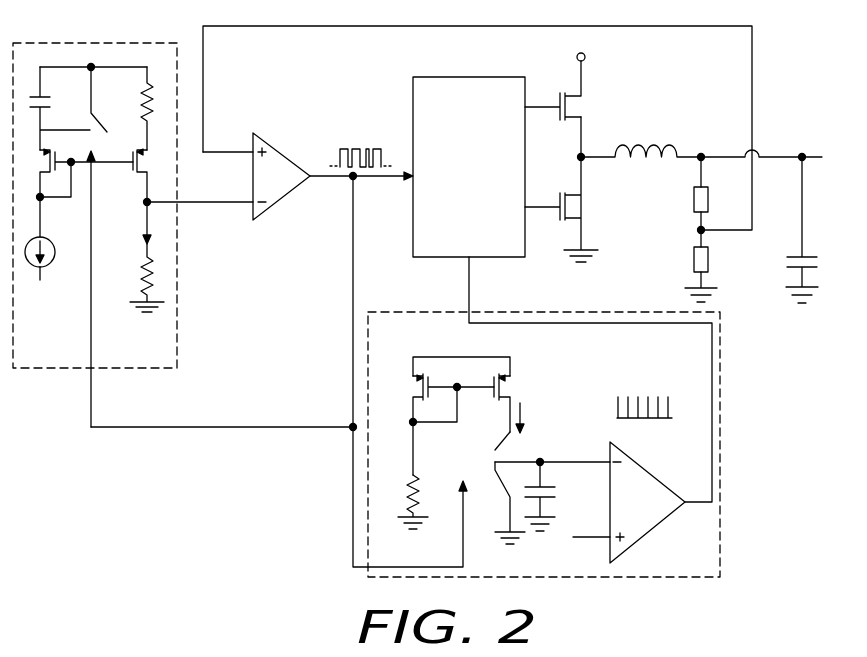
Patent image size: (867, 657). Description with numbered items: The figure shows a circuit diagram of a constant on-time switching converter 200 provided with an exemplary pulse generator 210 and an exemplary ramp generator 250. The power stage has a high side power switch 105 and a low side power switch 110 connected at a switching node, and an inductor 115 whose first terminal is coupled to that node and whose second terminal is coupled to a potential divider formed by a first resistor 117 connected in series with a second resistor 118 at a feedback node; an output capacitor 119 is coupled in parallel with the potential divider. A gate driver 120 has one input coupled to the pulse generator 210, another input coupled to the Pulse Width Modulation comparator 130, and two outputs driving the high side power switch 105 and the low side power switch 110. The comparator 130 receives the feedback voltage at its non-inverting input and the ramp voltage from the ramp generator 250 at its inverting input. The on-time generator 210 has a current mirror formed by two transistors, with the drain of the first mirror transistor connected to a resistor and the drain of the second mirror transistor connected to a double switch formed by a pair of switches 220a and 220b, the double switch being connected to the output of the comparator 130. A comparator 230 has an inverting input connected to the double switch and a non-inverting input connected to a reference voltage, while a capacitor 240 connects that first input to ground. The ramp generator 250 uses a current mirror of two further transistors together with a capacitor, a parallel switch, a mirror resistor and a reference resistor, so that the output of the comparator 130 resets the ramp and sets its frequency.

The buck converter / DC-DC converter 200 is at (168, 444).
The ramp generator 250 is at (97, 44).
The Pulse Width Modulation PWM comparator 130 is at (283, 147).
The gate driver 120 is at (480, 181).
The high side power switch 105 is at (582, 110).
The low side power switch 110 is at (582, 210).
The inductor 115 is at (640, 145).
The first resistor 117 is at (690, 205).
The second resistor 118 is at (687, 258).
The output capacitor 119 is at (782, 262).
The pulse generator 210 is at (576, 417).
The switch 220a is at (496, 444).
The switch 220b is at (498, 492).
The comparator 230 is at (657, 473).
The capacitor C1 240 is at (555, 500).